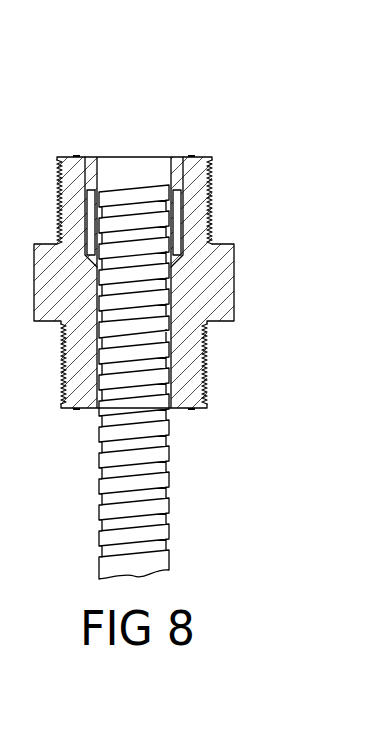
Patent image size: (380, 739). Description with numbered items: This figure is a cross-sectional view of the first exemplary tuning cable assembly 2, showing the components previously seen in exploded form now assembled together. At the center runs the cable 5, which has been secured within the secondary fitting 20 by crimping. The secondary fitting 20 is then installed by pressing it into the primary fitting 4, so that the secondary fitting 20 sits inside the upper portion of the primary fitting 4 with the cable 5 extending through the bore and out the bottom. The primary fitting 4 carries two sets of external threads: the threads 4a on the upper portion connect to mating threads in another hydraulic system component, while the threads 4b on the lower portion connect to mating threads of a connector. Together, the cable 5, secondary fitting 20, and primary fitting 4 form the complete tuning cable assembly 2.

The tuning cable assembly 2 is at (168, 307).
The secondary fitting 20 is at (84, 136).
The primary fitting 4 is at (173, 282).
The threads 4a is at (214, 198).
The threads 4b is at (208, 362).
The cable 5 is at (108, 493).